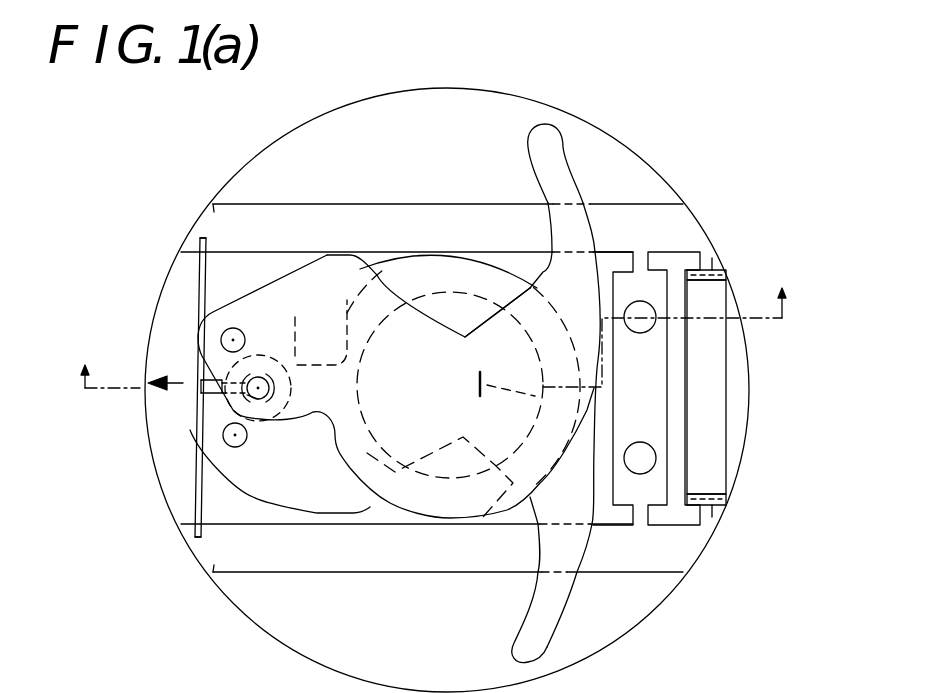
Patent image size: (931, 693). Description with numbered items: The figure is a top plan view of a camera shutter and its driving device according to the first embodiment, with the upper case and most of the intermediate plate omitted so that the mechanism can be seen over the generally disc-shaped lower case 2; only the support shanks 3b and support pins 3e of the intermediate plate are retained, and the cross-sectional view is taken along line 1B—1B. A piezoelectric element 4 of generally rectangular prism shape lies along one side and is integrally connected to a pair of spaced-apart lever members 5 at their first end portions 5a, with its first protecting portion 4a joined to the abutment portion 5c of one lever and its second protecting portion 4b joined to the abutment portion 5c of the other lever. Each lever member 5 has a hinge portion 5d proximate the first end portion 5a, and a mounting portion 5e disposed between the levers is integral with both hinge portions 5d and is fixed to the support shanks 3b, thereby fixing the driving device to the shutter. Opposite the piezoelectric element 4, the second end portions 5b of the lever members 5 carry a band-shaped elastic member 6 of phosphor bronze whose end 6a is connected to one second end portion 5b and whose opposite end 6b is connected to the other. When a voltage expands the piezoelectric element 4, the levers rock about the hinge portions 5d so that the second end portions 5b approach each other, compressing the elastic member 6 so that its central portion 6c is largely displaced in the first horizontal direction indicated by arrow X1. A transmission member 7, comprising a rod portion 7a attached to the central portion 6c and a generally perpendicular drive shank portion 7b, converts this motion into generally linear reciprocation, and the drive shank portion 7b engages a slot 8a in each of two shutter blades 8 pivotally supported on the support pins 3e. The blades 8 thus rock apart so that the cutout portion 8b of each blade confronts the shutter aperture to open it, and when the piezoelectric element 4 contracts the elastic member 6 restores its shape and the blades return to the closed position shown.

The lower case 2 is at (260, 152).
The support shanks 3b is at (647, 327).
The support pins 3e is at (236, 328).
The piezoelectric element 4 is at (728, 393).
The first protecting portion 4a is at (728, 272).
The second protecting portion 4b is at (728, 497).
The lever members 5 is at (320, 203).
The first end portion 5a is at (682, 222).
The second end portion 5b is at (225, 207).
The abutment portion 5c is at (712, 262).
The hinge portion 5d is at (632, 262).
The mounting portion 5e is at (660, 432).
The elastic member 6 is at (188, 278).
The end of elastic member 6a is at (198, 240).
The opposite end of elastic member 6b is at (197, 536).
The central portion 6c is at (188, 385).
The transmission member 7 is at (84, 450).
The rod portion 7a is at (200, 391).
The drive shank portion 7b is at (243, 395).
The shutter blades 8 is at (362, 268).
The slot 8a is at (262, 384).
The cutout portion 8b is at (513, 302).
The section line 1B— 1B is at (437, 330).
The arrow X1 is at (177, 388).